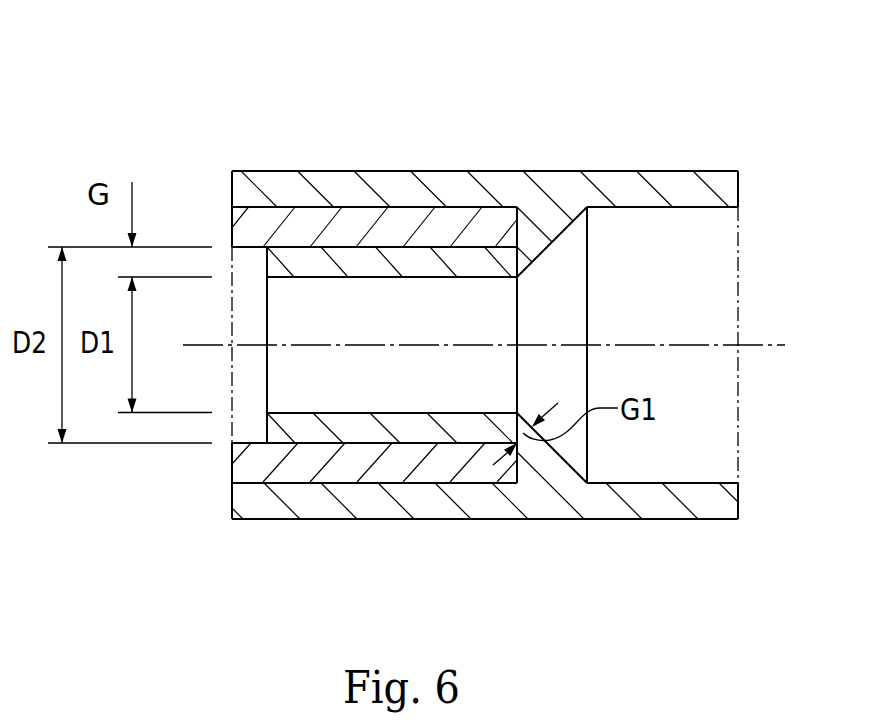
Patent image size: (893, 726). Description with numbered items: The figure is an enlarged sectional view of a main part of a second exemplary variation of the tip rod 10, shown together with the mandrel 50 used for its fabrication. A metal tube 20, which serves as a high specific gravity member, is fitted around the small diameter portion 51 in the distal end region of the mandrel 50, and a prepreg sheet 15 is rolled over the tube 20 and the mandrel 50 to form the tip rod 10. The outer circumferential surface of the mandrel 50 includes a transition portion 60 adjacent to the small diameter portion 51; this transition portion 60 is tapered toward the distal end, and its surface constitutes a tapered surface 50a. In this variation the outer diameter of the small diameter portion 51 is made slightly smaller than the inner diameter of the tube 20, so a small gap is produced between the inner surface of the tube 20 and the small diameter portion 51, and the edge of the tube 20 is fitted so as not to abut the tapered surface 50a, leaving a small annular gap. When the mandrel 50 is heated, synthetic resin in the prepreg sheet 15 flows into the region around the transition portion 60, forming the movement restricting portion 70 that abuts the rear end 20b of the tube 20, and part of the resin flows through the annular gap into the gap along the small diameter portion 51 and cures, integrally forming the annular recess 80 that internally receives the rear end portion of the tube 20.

The tip rod 10 is at (485, 284).
The prepreg sheet 15 is at (403, 187).
The tube 20 is at (358, 230).
The rear end of the tube 20b is at (522, 222).
The annular recess 80 is at (418, 206).
The mandrel 50 is at (677, 237).
The tapered surface 50a is at (566, 208).
The small diameter portion 51 is at (418, 383).
The transition portion 60 is at (570, 238).
The movement restricting portion 70 is at (548, 237).